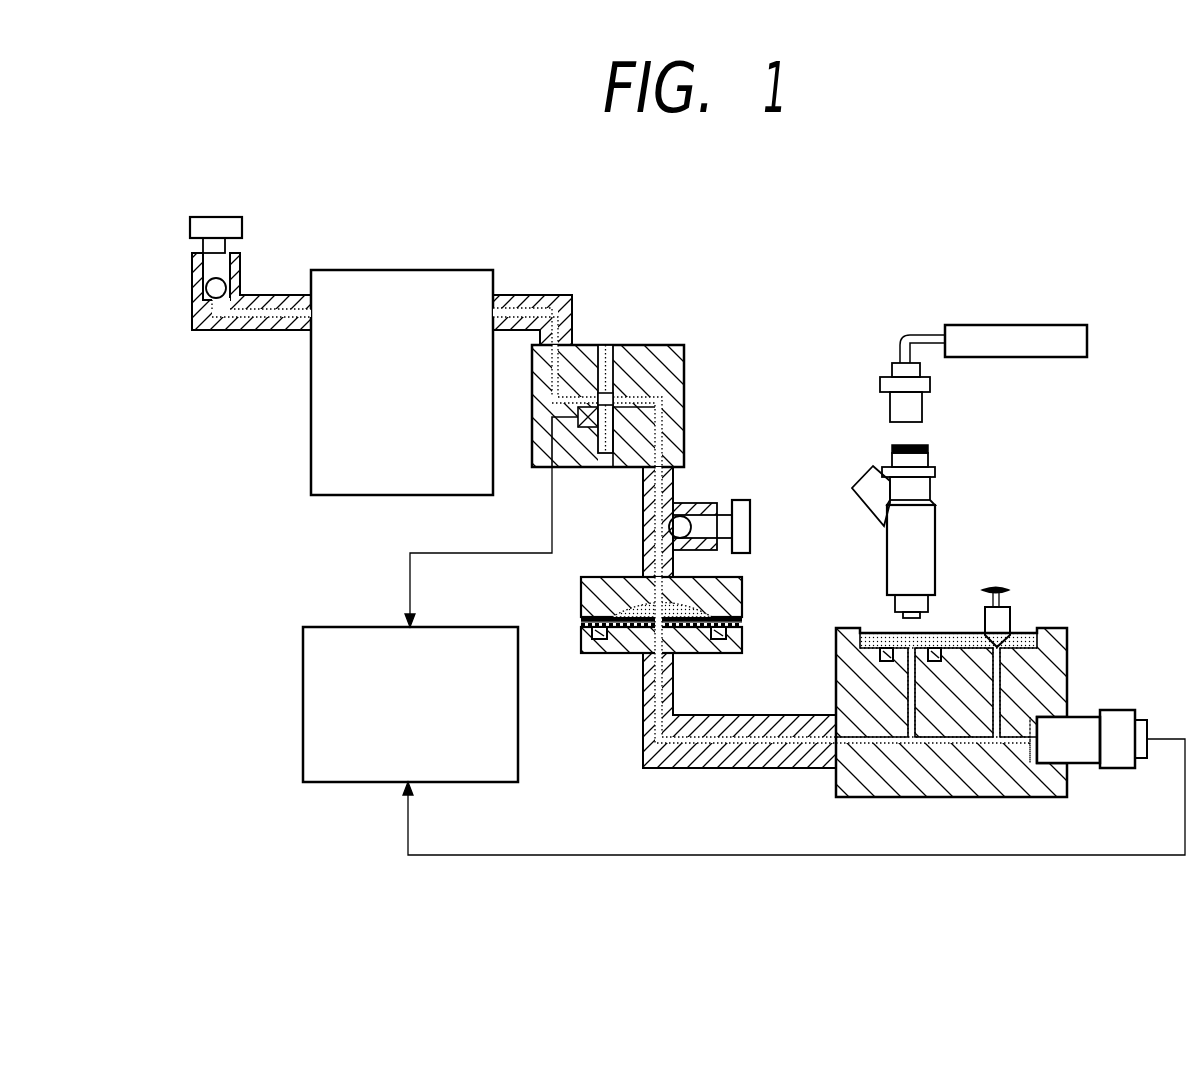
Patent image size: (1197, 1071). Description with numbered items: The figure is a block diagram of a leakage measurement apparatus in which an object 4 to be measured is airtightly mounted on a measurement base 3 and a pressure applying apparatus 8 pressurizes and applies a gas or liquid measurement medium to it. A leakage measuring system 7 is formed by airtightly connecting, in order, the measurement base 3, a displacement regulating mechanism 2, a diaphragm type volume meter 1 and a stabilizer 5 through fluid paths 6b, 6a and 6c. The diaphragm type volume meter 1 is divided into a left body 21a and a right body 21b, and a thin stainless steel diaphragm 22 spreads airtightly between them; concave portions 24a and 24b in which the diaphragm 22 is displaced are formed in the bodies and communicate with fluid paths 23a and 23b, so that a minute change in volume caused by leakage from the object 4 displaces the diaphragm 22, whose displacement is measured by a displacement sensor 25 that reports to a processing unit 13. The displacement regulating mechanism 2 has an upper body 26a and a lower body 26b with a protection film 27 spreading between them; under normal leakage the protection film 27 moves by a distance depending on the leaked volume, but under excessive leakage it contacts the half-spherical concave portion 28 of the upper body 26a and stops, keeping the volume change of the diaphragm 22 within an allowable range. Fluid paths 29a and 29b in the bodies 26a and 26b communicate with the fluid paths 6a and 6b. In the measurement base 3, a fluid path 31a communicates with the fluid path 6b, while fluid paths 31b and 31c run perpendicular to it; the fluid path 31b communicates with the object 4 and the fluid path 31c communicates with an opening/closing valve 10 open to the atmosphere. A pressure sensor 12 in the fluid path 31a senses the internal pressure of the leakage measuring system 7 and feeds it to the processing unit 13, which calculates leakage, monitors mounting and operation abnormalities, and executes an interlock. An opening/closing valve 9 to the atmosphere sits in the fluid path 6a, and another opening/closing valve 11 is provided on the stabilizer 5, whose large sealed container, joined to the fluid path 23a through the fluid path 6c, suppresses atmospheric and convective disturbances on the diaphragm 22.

The diaphragm type volume meter 1 is at (643, 309).
The displacement regulating mechanism 2 is at (757, 586).
The measurement base 3 is at (1057, 638).
The object to be measured 4 is at (920, 542).
The stabilizer 5 is at (413, 396).
The fluid path 6a is at (675, 480).
The fluid path 6b is at (777, 725).
The fluid path 6c is at (515, 295).
The leakage measuring system 7 is at (756, 406).
The pressure applying apparatus 8 is at (993, 333).
The opening/closing valve 9 is at (748, 510).
The opening/closing valve 10 is at (1012, 615).
The opening/closing valve 11 is at (222, 223).
The pressure sensor 12 is at (1080, 728).
The processing unit 13 is at (423, 715).
The body 21a is at (583, 350).
The body 21b is at (685, 350).
The diaphragm 22 is at (613, 356).
The fluid path 23a is at (552, 392).
The fluid path 23b is at (660, 398).
The concave portion 24a is at (602, 452).
The concave portion 24b is at (614, 394).
The displacement sensor 25 is at (580, 426).
The body 26a is at (730, 602).
The body 26b is at (590, 645).
The protection film 27 is at (700, 640).
The diaphragm 28 is at (600, 618).
The fluid path 29a is at (640, 583).
The fluid path 29b is at (640, 655).
The fluid path 31a is at (882, 742).
The fluid path 31b is at (930, 713).
The fluid path 31c is at (987, 703).